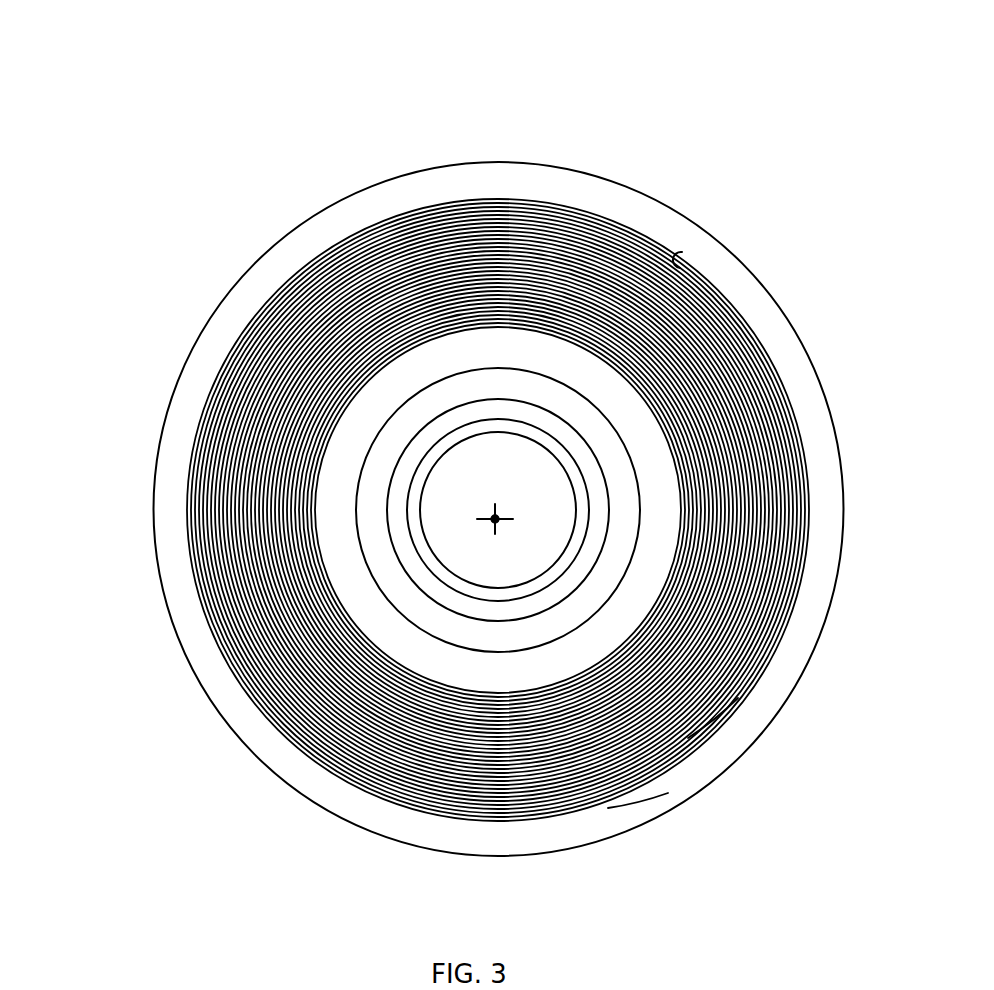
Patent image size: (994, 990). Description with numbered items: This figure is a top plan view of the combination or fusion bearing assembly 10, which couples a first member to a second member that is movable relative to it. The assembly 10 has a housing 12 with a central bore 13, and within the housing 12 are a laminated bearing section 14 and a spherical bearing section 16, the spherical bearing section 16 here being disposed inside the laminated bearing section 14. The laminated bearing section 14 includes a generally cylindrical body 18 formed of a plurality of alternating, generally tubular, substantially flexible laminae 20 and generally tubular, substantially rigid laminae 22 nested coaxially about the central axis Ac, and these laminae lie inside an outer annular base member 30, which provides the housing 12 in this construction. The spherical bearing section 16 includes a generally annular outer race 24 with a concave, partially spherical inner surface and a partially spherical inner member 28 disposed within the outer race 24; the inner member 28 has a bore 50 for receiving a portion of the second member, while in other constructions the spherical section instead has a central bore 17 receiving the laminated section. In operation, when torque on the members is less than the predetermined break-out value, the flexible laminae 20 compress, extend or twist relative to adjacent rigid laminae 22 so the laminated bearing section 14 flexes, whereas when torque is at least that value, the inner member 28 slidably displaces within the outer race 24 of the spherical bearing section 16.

The bearing assembly 10 is at (231, 92).
The housing 12 is at (126, 485).
The central bore 13 is at (688, 258).
The laminated bearing section 14 is at (480, 198).
The spherical bearing section 16 is at (634, 551).
The central bore 17 is at (485, 583).
The generally cylindrical body 18 is at (593, 245).
The flexible laminae 20 is at (645, 747).
The rigid laminae 22 is at (707, 707).
The outer race 24 is at (624, 518).
The inner member 28 is at (602, 477).
The outer annular base member 30 is at (802, 348).
The bore 50 is at (482, 443).
The central axis Ac is at (492, 502).